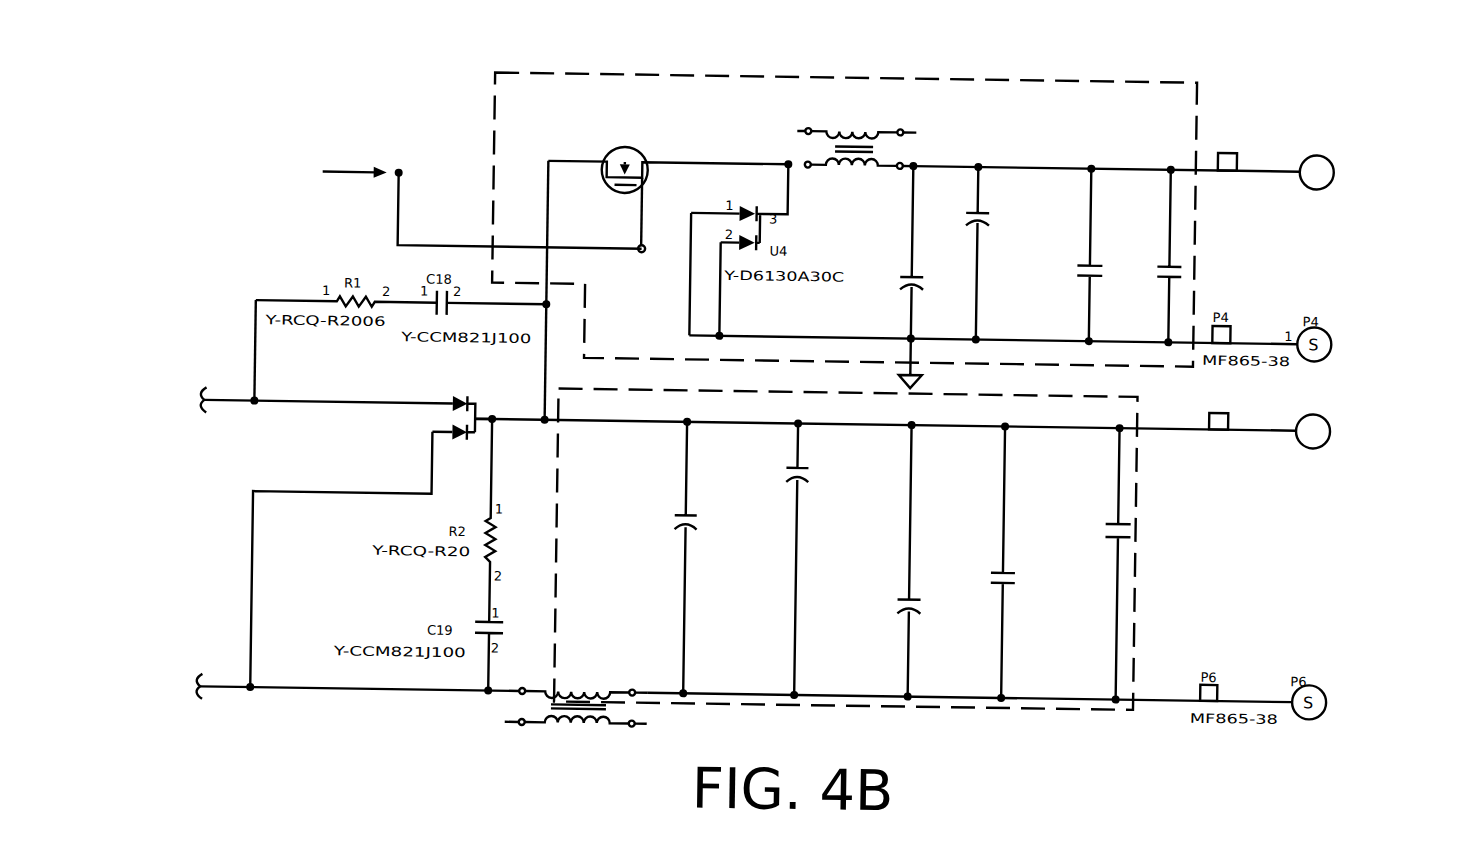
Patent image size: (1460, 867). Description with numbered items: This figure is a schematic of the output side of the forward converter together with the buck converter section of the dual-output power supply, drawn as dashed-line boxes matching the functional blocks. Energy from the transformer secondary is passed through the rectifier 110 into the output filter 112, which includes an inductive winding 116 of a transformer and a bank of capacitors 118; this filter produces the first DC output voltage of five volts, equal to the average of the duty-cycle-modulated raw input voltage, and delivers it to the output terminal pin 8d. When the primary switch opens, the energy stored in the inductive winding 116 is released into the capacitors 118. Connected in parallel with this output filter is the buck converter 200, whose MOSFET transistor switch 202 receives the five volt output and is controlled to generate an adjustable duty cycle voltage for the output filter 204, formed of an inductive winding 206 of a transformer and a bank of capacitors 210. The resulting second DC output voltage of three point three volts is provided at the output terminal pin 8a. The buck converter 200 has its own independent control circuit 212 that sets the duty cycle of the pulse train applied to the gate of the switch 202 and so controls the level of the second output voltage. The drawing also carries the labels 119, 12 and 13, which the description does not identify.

The buck converter 200 is at (569, 87).
The MOSFET transistor switch 202 is at (622, 153).
The output filter 204 is at (995, 205).
The inductive winding 206 is at (850, 185).
The bank of capacitors 210 is at (1102, 219).
The control circuit 212 is at (434, 187).
The rectifier 110 is at (466, 400).
The output filter 112 is at (882, 606).
The inductive winding 116 is at (577, 668).
The bank of capacitors 118 is at (923, 658).
The diode U3 (second diode) 119 is at (418, 437).
The output terminal pin 8a is at (1259, 164).
The output terminal pin 8d is at (1262, 426).
The transformer 12 is at (576, 698).
The transformer 13 is at (850, 141).